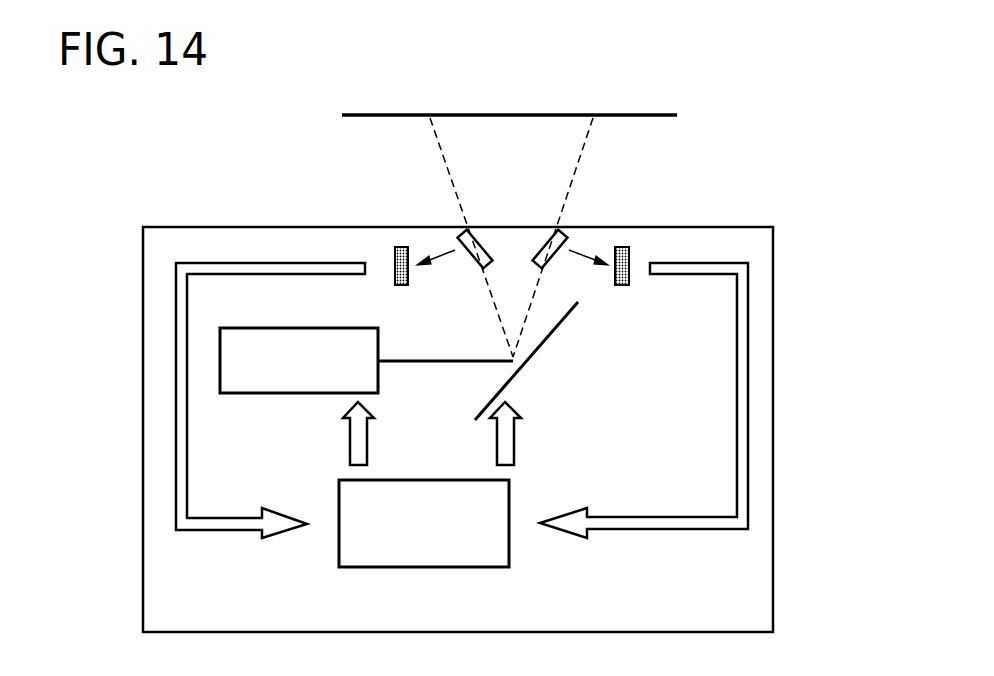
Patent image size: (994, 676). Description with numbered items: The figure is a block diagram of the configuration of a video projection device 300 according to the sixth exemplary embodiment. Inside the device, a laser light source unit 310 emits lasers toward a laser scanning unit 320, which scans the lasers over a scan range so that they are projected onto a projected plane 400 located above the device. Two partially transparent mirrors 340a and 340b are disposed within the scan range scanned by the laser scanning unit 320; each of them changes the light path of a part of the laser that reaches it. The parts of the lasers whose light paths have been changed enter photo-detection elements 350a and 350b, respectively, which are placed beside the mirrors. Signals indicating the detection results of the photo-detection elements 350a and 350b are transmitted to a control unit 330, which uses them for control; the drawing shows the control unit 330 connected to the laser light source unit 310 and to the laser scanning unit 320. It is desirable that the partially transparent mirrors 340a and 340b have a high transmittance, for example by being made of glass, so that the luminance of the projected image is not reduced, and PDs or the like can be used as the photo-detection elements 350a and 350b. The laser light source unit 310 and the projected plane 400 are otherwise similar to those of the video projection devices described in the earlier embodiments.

The video projection device 300 is at (715, 227).
The laser light source unit 310 is at (378, 337).
The laser scanning unit 320 is at (550, 335).
The control unit 330 is at (339, 495).
The partially transparent mirror 340a is at (456, 242).
The partially transparent mirror 340b is at (569, 242).
The photo-detection element 350a is at (394, 279).
The photo-detection element 350b is at (630, 278).
The projected plane 400 is at (637, 115).